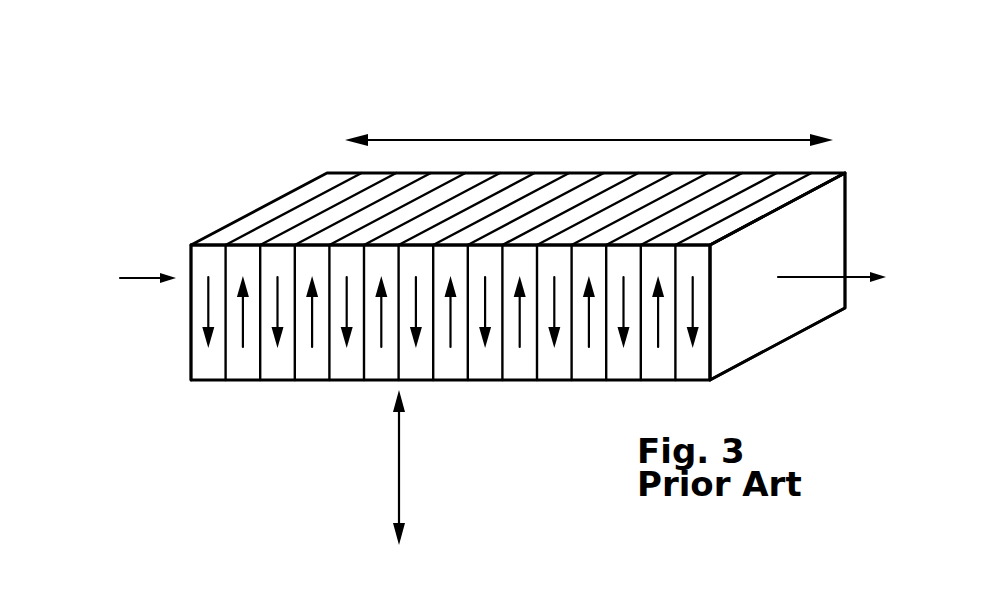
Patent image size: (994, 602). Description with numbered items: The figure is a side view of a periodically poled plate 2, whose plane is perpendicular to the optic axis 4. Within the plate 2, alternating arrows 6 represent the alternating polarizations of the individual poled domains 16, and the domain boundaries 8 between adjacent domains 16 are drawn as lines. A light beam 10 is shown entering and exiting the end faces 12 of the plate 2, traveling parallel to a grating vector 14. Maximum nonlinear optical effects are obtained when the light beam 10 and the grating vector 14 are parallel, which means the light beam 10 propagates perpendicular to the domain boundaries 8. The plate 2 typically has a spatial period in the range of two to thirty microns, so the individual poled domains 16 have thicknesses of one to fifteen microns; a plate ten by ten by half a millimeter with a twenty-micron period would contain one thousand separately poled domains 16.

The periodically poled plate 2 is at (498, 297).
The optic axis 4 is at (398, 484).
The alternating arrows 6 is at (205, 310).
The domain boundaries 8 is at (602, 362).
The light beam 10 is at (140, 275).
The end faces 12 is at (190, 300).
The grating vector 14 is at (802, 138).
The poled domains 16 is at (242, 363).